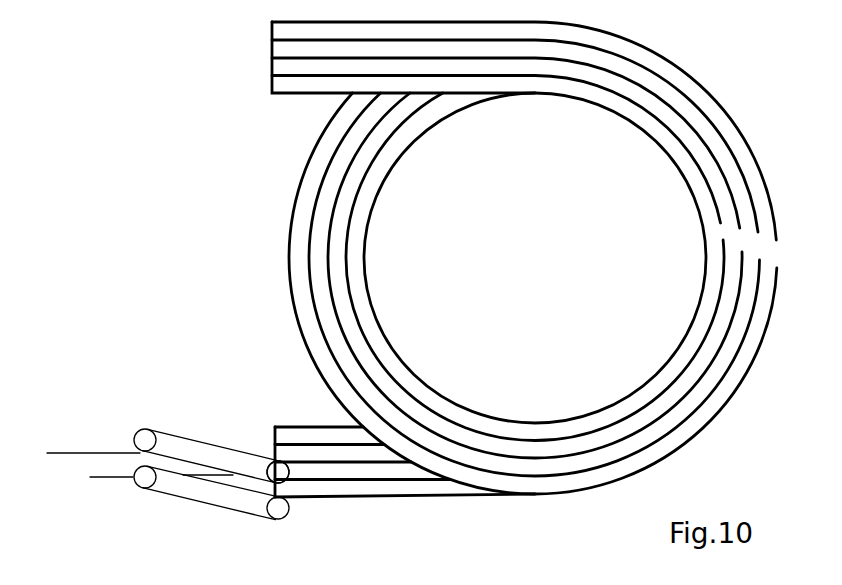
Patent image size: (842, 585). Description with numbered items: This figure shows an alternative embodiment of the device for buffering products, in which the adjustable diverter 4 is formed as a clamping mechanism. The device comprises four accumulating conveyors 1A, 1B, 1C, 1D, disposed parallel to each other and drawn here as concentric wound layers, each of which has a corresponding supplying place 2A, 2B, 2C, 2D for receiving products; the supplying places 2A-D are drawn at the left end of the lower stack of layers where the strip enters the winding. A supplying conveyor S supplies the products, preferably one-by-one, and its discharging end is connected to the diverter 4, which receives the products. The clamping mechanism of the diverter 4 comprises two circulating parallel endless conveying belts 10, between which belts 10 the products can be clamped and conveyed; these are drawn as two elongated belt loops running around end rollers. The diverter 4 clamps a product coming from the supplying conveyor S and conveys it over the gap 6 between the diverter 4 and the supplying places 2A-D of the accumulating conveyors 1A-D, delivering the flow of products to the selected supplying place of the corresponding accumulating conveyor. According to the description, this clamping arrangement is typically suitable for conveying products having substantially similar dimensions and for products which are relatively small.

The accumulating conveyor 1A is at (720, 123).
The accumulating conveyor 1B is at (718, 153).
The accumulating conveyor 1C is at (717, 183).
The accumulating conveyor 1D is at (705, 202).
The supplying place 2A is at (408, 487).
The supplying place 2B is at (365, 470).
The supplying place 2C is at (322, 452).
The supplying place 2D is at (298, 436).
The diverter 4 is at (197, 440).
The gap 6 is at (260, 451).
The endless conveying belts 10 is at (252, 477).
The supplying conveyor S is at (91, 462).